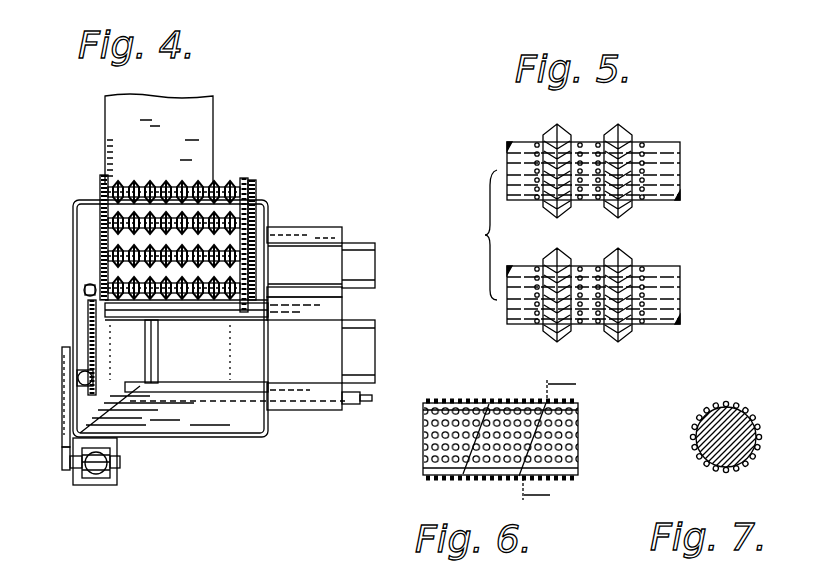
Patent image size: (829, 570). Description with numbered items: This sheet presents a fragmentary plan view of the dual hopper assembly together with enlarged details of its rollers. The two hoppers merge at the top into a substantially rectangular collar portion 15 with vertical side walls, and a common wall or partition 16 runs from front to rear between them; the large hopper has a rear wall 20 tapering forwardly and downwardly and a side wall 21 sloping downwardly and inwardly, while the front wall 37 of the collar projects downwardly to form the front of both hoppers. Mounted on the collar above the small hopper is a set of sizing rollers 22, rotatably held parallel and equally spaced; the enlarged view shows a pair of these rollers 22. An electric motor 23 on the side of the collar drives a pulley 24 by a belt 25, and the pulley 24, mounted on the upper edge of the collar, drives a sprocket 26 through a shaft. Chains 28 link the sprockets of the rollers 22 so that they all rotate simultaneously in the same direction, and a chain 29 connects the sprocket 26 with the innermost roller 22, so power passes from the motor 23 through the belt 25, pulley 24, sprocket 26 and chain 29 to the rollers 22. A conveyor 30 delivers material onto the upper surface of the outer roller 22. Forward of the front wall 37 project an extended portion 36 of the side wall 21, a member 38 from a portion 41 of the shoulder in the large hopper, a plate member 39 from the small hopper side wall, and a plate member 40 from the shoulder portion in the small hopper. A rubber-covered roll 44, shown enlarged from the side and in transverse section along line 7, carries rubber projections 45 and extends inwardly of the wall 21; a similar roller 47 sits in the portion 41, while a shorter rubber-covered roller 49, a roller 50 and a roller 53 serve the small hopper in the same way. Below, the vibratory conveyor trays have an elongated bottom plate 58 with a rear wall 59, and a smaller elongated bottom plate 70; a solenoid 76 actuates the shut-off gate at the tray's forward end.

In FIG. 4, the collar portion 15 is at (82, 290).
In FIG. 4, the common wall or partition 16 is at (176, 312).
In FIG. 4, the rear wall of the hopper 20 is at (111, 362).
In FIG. 4, the side wall of the hopper 21 is at (195, 432).
In FIG. 4, the sizing rollers 22 is at (140, 310).
In FIG. 5, the sizing rollers 22 is at (655, 263).
In FIG. 4, the electric motor 23 is at (118, 475).
In FIG. 4, the pulley 24 is at (63, 358).
In FIG. 4, the belt 25 is at (63, 423).
In FIG. 4, the sprocket 26 is at (92, 386).
In FIG. 4, the chains 28 is at (258, 270).
In FIG. 4, the chain 29 is at (86, 330).
In FIG. 4, the conveyor 30 is at (205, 132).
In FIG. 4, the extended portion 36 is at (330, 412).
In FIG. 4, the front wall 37 is at (270, 343).
In FIG. 4, the member 38 is at (333, 322).
In FIG. 4, the plate member 39 is at (330, 228).
In FIG. 4, the plate member 40 is at (343, 290).
In FIG. 4, the portion of the shoulder 41 is at (208, 312).
In FIG. 4, the roll 44 is at (232, 393).
In FIG. 6, the roll 44 is at (577, 445).
In FIG. 7, the roll 44 is at (735, 415).
In FIG. 6, the rubber projections 45 is at (486, 400).
In FIG. 7, the rubber projections 45 is at (697, 449).
In FIG. 4, the roller 47 is at (244, 318).
In FIG. 4, the rubber covered roller 49 is at (302, 251).
In FIG. 4, the roller 50 is at (316, 287).
In FIG. 4, the roller 53 is at (232, 180).
In FIG. 4, the elongated bottom plate 58 is at (238, 357).
In FIG. 4, the rear wall 59 is at (158, 365).
In FIG. 4, the elongated bottom plate 70 is at (370, 270).
In FIG. 4, the solenoid 76 is at (350, 406).
In FIG. 6, the section line 7 is at (519, 442).